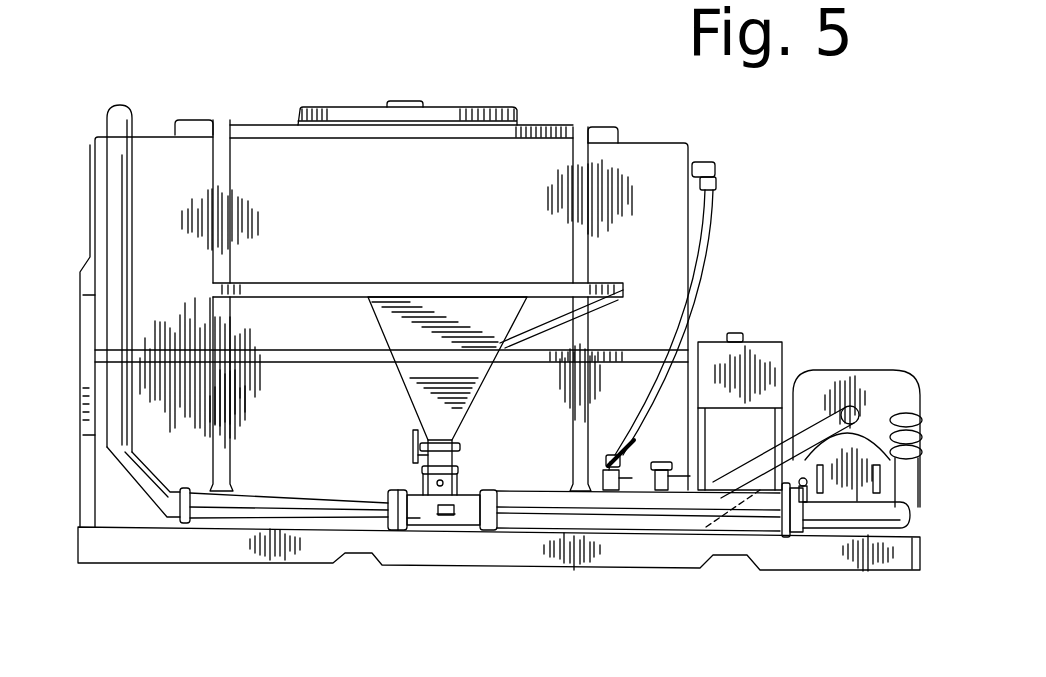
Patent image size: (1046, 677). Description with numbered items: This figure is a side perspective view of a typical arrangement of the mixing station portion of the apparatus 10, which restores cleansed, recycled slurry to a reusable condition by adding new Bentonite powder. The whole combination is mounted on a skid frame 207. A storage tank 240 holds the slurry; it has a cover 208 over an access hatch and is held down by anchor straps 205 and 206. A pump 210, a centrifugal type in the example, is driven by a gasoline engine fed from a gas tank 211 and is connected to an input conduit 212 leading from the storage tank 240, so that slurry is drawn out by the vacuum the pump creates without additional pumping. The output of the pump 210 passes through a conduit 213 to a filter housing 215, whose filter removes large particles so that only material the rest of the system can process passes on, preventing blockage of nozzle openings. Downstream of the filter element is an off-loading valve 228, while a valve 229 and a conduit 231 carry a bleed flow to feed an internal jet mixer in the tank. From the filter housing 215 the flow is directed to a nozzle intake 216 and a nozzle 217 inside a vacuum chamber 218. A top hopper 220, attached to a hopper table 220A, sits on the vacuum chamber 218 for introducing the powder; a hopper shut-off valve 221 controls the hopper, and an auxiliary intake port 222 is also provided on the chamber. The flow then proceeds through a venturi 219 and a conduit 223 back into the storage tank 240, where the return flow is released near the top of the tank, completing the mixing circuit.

The apparatus 10 is at (371, 68).
The anchor strap 205 is at (218, 471).
The anchor strap 206 is at (220, 120).
The skid frame 207 is at (823, 555).
The cover 208 is at (475, 110).
The pump 210 is at (867, 378).
The gas tank 211 is at (765, 342).
The input conduit 212 is at (815, 430).
The conduit 213 is at (903, 543).
The filter housing 215 is at (760, 520).
The nozzle intake 216 is at (470, 524).
The nozzle 217 is at (443, 530).
The vacuum chamber 218 is at (410, 532).
The venturi 219 is at (243, 507).
The top hopper 220 is at (437, 300).
The hopper table 220A is at (550, 292).
The hopper shut-off valve 221 is at (405, 439).
The auxiliary intake port 222 is at (423, 473).
The conduit 223 is at (113, 213).
The off-loading valve 228 is at (660, 513).
The valve 229 is at (603, 493).
The conduit 231 is at (705, 217).
The storage tank 240 is at (651, 170).